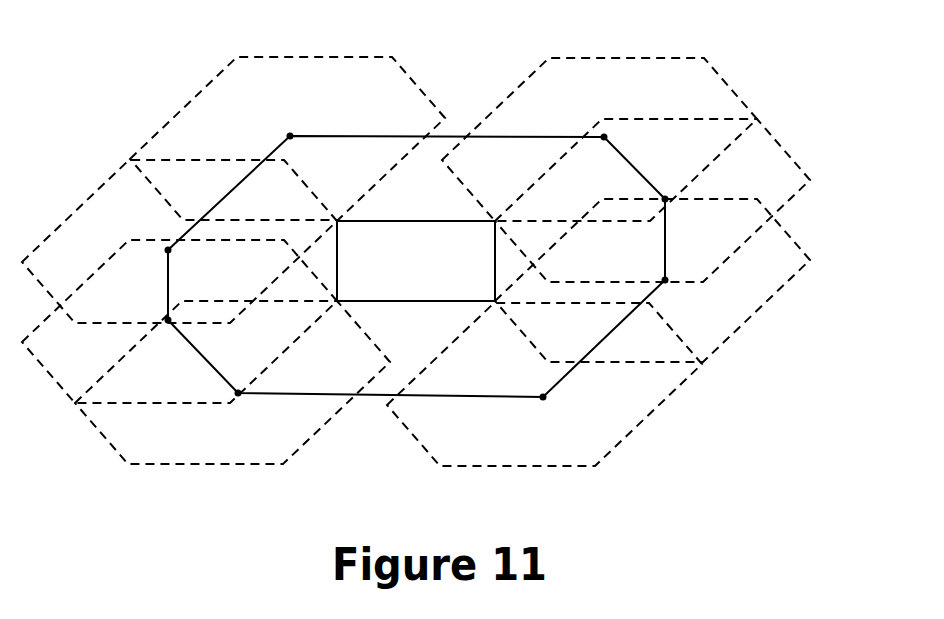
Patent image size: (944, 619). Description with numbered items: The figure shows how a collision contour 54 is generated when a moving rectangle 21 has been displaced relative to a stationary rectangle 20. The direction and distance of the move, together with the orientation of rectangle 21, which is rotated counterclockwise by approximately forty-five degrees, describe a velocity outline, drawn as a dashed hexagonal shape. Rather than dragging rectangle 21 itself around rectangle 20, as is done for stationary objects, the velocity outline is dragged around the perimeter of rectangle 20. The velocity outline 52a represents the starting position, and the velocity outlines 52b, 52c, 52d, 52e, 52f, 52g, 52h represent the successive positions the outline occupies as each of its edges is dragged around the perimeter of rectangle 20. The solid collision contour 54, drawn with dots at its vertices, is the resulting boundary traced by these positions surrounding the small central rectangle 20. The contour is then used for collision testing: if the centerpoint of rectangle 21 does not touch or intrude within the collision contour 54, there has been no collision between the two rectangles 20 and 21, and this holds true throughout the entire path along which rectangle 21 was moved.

The rectangle 20 is at (431, 277).
The rectangle 21 is at (648, 119).
The collision contour 54 is at (457, 136).
The velocity outline 52a is at (670, 395).
The velocity outline 52b is at (766, 303).
The velocity outline 52c is at (803, 188).
The velocity outline 52d is at (741, 135).
The velocity outline 52e is at (437, 126).
The velocity outline 52f is at (268, 287).
The velocity outline 52g is at (280, 355).
The velocity outline 52h is at (323, 427).